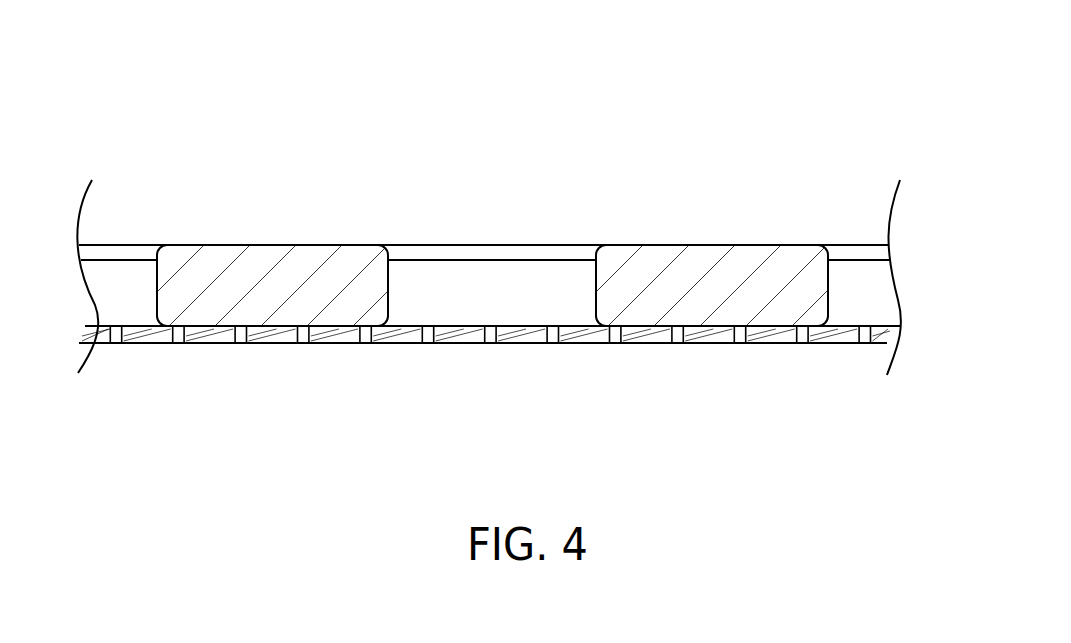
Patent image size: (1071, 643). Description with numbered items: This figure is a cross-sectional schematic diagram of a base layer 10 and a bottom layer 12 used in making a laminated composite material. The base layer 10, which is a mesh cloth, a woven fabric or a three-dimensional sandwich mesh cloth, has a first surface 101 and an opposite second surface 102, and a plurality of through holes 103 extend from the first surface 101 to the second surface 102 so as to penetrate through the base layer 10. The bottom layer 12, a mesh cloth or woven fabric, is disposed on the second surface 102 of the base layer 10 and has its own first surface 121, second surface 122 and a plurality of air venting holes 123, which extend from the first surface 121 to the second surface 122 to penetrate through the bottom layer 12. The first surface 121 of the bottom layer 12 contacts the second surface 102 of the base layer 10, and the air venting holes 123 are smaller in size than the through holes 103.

The base layer 10 is at (896, 128).
The first surface 101 is at (742, 245).
The second surface 102 is at (713, 333).
The through holes 103 is at (472, 283).
The bottom layer 12 is at (871, 372).
The first surface 121 is at (852, 320).
The second surface 122 is at (830, 343).
The air venting holes 123 is at (490, 335).